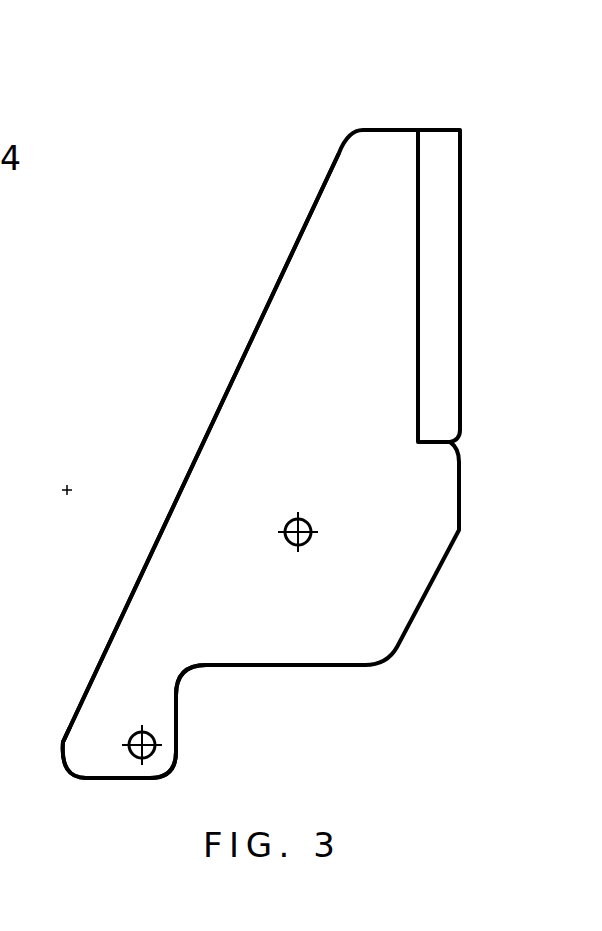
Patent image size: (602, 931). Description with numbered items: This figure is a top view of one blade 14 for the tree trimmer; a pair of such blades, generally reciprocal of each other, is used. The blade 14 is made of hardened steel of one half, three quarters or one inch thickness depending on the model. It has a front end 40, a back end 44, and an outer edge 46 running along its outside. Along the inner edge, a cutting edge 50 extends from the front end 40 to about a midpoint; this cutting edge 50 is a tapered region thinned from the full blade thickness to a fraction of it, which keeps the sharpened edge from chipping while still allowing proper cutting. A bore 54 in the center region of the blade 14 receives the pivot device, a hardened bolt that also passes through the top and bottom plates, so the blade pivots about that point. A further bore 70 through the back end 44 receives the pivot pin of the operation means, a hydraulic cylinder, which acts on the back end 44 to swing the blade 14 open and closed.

The blade 14 is at (290, 210).
The front end 40 is at (392, 128).
The back end 44 is at (85, 776).
The outer edge 46 is at (258, 325).
The cutting edge 50 is at (452, 200).
The bore 54 is at (288, 523).
The bore 70 is at (130, 735).